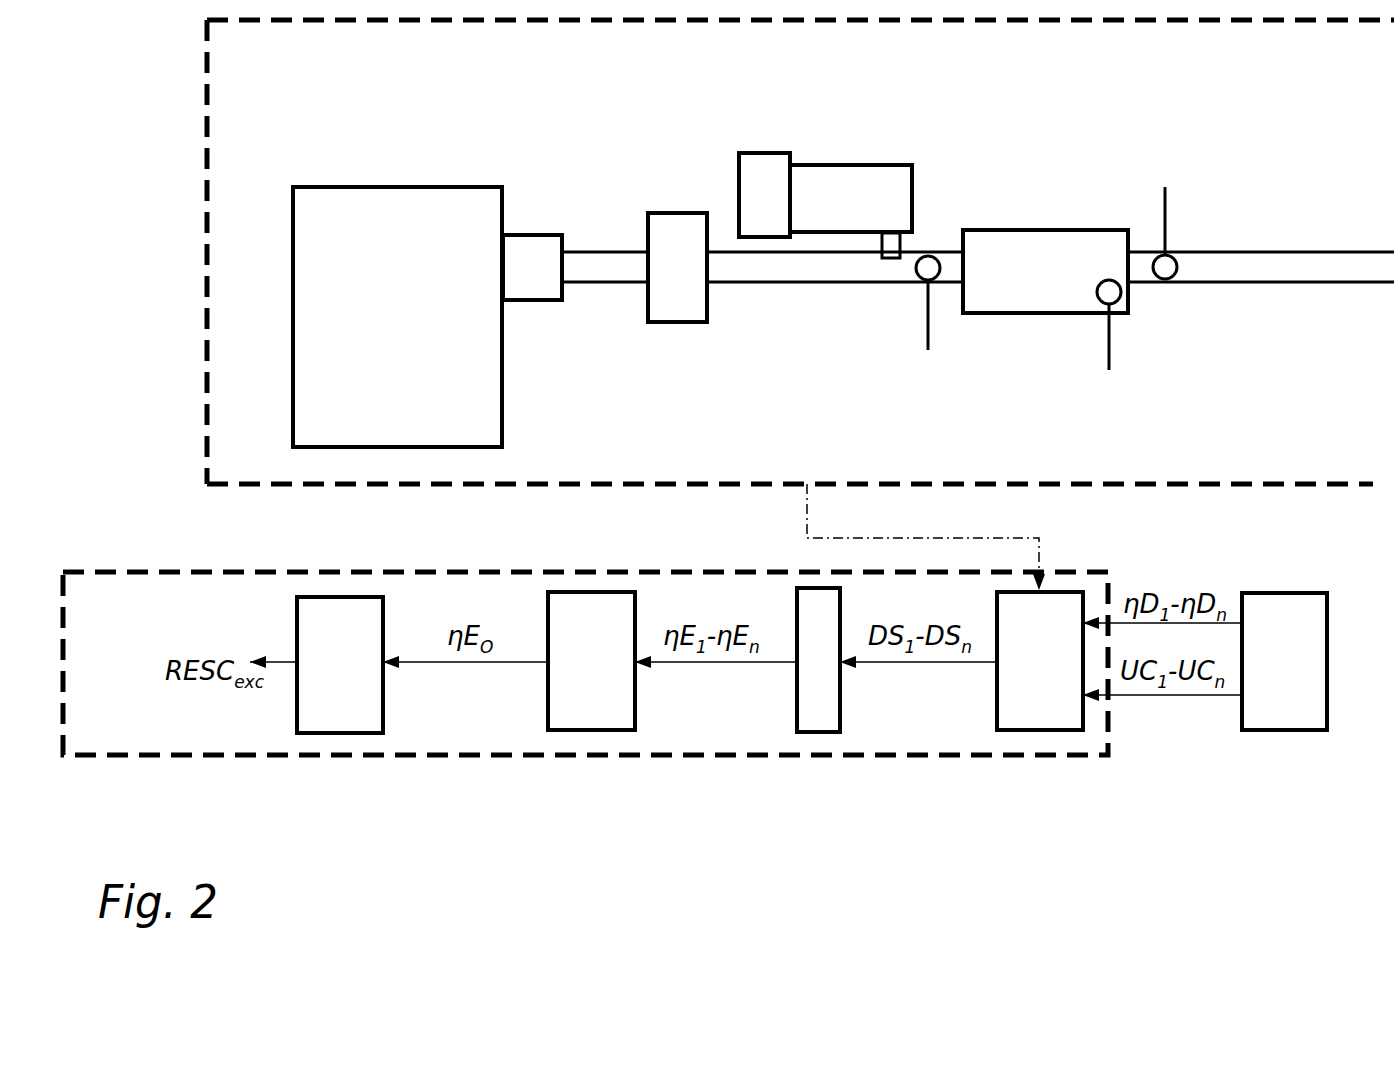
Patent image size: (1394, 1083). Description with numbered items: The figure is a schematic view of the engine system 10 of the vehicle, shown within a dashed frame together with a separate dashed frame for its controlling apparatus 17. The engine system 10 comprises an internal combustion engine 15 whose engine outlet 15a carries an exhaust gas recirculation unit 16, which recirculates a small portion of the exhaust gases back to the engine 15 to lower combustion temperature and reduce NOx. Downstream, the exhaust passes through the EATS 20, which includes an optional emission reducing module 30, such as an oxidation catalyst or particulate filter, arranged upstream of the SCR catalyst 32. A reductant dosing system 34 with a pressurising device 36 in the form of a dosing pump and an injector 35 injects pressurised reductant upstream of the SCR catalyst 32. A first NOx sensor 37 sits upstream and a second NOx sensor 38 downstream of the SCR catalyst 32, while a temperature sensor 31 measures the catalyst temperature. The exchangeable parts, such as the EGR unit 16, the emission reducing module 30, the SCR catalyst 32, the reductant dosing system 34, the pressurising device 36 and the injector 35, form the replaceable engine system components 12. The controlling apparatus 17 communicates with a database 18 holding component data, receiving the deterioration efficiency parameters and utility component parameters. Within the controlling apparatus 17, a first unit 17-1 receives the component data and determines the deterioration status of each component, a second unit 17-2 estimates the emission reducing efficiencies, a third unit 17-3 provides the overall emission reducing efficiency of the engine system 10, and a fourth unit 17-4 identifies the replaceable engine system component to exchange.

The engine system 10 is at (1390, 484).
The replaceable engine system components 12 is at (888, 328).
The internal combustion engine 15 is at (325, 187).
The engine outlet 15a is at (507, 227).
The EGR unit 16 is at (535, 300).
The controlling apparatus 17 is at (1098, 757).
The first unit 17-1 is at (1010, 730).
The second unit 17-2 is at (815, 732).
The third unit 17-3 is at (568, 730).
The fourth unit 17-4 is at (317, 733).
The database 18 is at (1247, 732).
The EATS 20 is at (1057, 140).
The emission reducing module 30 is at (665, 322).
The temperature sensor 31 is at (1102, 357).
The SCR catalyst 32 is at (1000, 312).
The reductant dosing system 34 is at (930, 158).
The injector 35 is at (907, 247).
The pressurising device 36 is at (738, 190).
The first NOx sensor 37 is at (922, 327).
The second NOx sensor 38 is at (1160, 203).